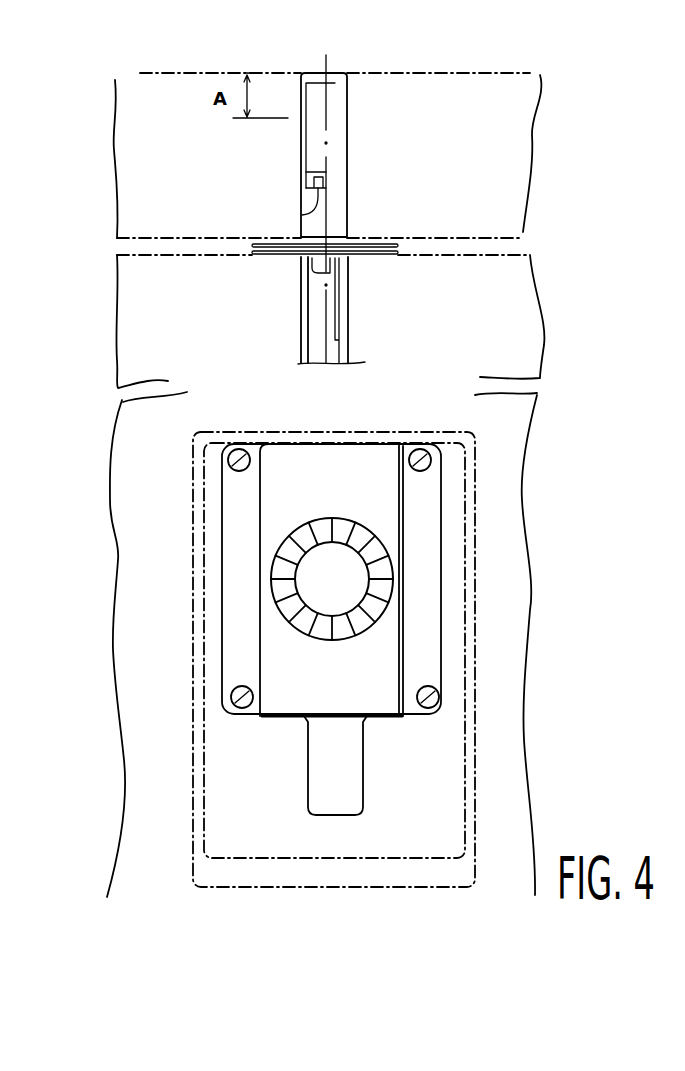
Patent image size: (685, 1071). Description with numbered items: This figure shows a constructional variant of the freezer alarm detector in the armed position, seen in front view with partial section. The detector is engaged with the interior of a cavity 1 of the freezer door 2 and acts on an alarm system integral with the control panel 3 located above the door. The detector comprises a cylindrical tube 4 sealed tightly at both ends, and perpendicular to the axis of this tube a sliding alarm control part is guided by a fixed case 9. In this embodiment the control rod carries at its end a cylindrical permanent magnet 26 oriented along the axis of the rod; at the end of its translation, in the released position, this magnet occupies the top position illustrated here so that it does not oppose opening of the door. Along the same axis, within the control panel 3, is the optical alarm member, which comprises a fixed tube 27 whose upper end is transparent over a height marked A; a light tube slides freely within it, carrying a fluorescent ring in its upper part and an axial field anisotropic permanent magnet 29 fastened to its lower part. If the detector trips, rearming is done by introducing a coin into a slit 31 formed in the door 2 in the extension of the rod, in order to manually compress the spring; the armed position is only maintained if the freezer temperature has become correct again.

The cavity 1 is at (223, 813).
The freezer door 2 is at (137, 283).
The control panel 3 is at (121, 208).
The cylindrical tube 4 is at (283, 600).
The fixed case 9 is at (233, 503).
The cylindrical permanent magnet 26 is at (322, 272).
The fixed tube 27 is at (301, 195).
The axial field anisotropic permanent magnet 29 is at (302, 215).
The slit 31 is at (330, 320).